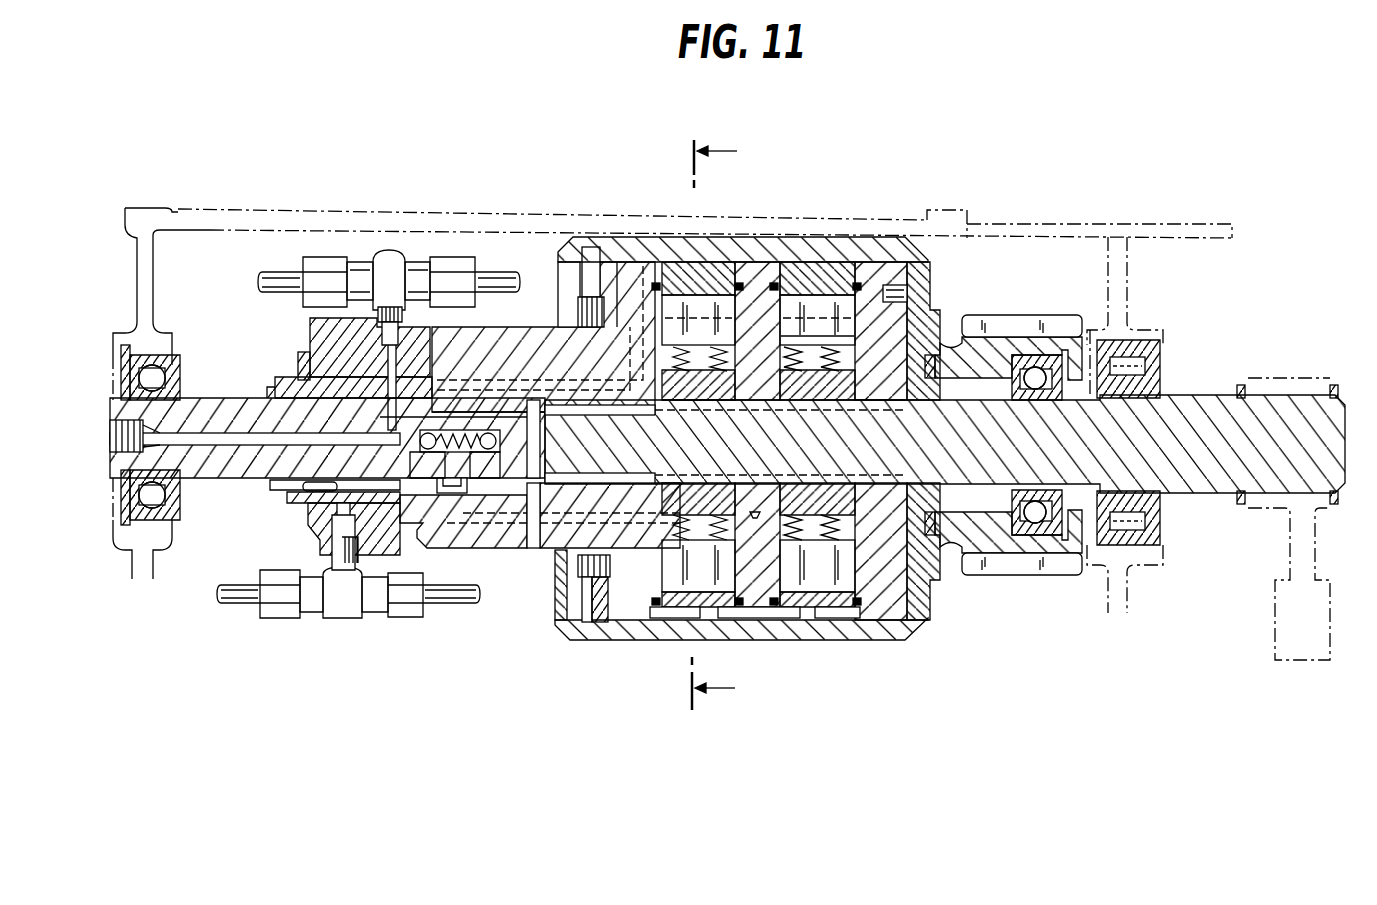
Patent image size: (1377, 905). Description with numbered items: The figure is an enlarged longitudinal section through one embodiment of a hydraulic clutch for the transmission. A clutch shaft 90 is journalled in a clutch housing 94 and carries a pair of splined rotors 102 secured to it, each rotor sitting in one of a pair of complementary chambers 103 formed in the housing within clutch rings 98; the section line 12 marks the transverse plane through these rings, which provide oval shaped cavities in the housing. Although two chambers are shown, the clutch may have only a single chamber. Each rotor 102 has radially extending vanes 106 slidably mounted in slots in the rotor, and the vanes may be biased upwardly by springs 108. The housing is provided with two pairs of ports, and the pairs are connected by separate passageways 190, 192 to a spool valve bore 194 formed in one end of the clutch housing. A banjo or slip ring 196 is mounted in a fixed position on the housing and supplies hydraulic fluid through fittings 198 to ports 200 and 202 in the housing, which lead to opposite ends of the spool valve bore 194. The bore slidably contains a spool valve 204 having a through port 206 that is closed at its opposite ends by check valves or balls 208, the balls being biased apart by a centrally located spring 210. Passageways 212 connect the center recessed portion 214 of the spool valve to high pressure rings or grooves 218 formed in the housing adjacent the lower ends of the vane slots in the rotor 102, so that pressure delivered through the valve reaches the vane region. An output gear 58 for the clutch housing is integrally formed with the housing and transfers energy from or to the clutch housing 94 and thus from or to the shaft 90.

The section line 12- 12 is at (728, 425).
The output gear 58 is at (998, 575).
The clutch shaft 90 is at (1207, 402).
The clutch housing 94 is at (885, 237).
The clutch rings 98 is at (702, 268).
The splined rotors 102 is at (706, 400).
The complementary chambers 103 is at (720, 306).
The radially extending vanes 106 is at (848, 339).
The springs 108 is at (840, 533).
The passageway 190 is at (650, 240).
The passageway 192 is at (543, 337).
The spool valve bore 194 is at (560, 358).
The banjo or slip ring 196 is at (315, 336).
The fittings 198 is at (330, 258).
The port 200 is at (392, 388).
The port 202 is at (502, 495).
The spool valve 204 is at (507, 460).
The through port 206 is at (382, 452).
The check valves or balls 208 is at (427, 452).
The spring 210 is at (496, 410).
The passageways 212 is at (752, 512).
The center recessed portion 214 is at (444, 470).
The high pressure rings or grooves 218 is at (770, 522).